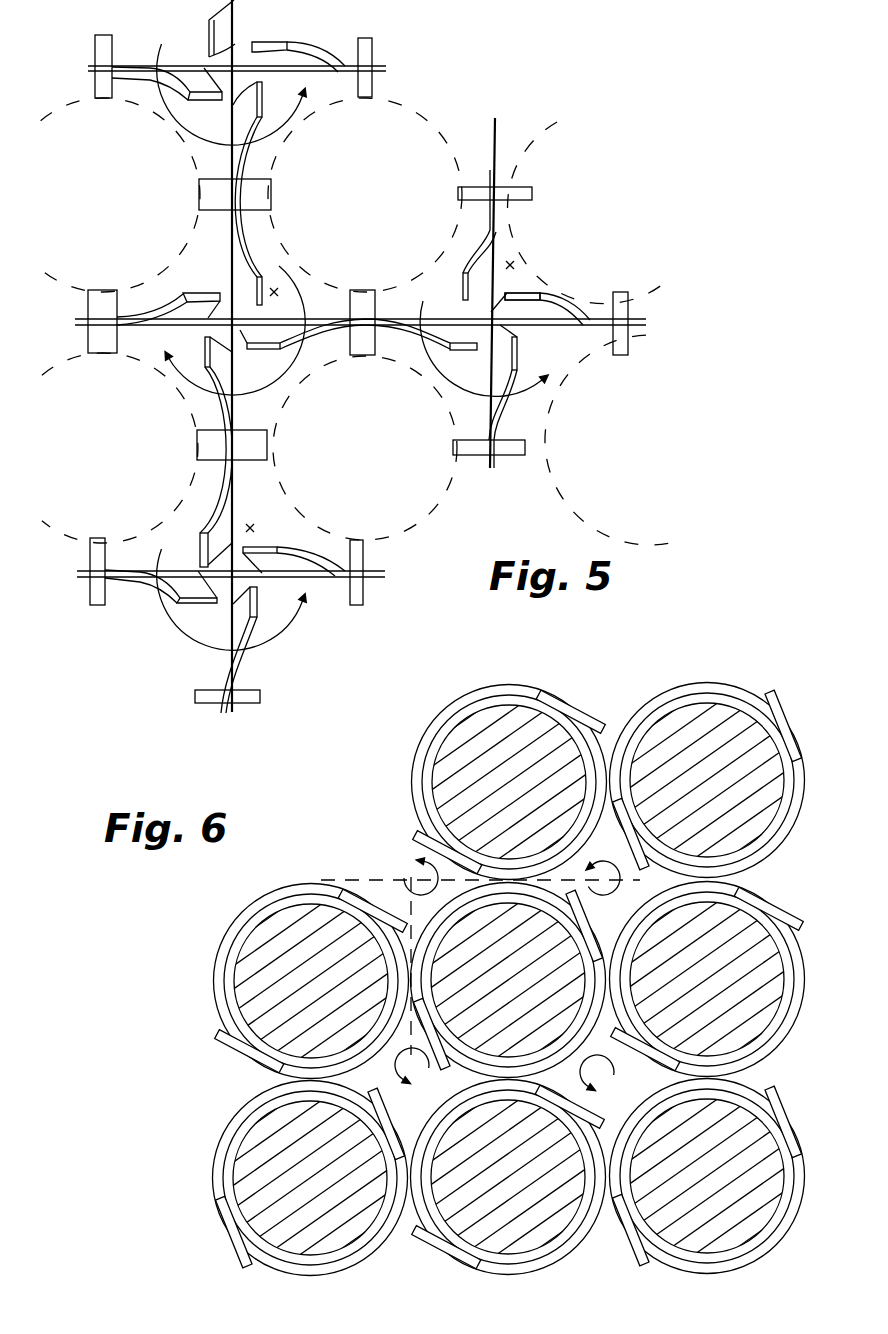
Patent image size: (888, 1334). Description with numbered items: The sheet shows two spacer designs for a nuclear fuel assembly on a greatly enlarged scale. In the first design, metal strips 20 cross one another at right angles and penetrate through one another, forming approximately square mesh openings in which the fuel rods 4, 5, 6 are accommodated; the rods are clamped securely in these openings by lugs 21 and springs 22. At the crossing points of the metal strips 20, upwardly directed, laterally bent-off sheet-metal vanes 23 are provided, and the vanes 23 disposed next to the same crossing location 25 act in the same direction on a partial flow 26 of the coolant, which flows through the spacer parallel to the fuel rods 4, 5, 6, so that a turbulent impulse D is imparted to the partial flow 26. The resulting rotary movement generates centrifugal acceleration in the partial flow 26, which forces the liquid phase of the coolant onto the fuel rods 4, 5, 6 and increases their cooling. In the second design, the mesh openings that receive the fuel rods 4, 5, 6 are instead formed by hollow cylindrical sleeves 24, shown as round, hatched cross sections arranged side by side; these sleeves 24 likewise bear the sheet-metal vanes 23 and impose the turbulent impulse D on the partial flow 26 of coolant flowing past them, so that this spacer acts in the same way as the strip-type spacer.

In FIG. 5, the metal strips 20 is at (386, 68).
In FIG. 5, the lugs 21 is at (199, 195).
In FIG. 5, the springs 22 is at (112, 75).
In FIG. 5, the sheet-metal vanes 23 is at (242, 278).
In FIG. 6, the sheet-metal vanes 23 is at (757, 690).
In FIG. 6, the hollow cylindrical sleeves 24 is at (306, 886).
In FIG. 5, the crossing location 25 is at (505, 288).
In FIG. 5, the partial flow 26 is at (276, 290).
In FIG. 5, the fuel rod 4 is at (374, 192).
In FIG. 5, the fuel rod 5 is at (105, 228).
In FIG. 5, the fuel rod 6 is at (601, 166).
In FIG. 5, the turbulent impulse D is at (200, 137).
In FIG. 6, the turbulent impulse D is at (438, 880).